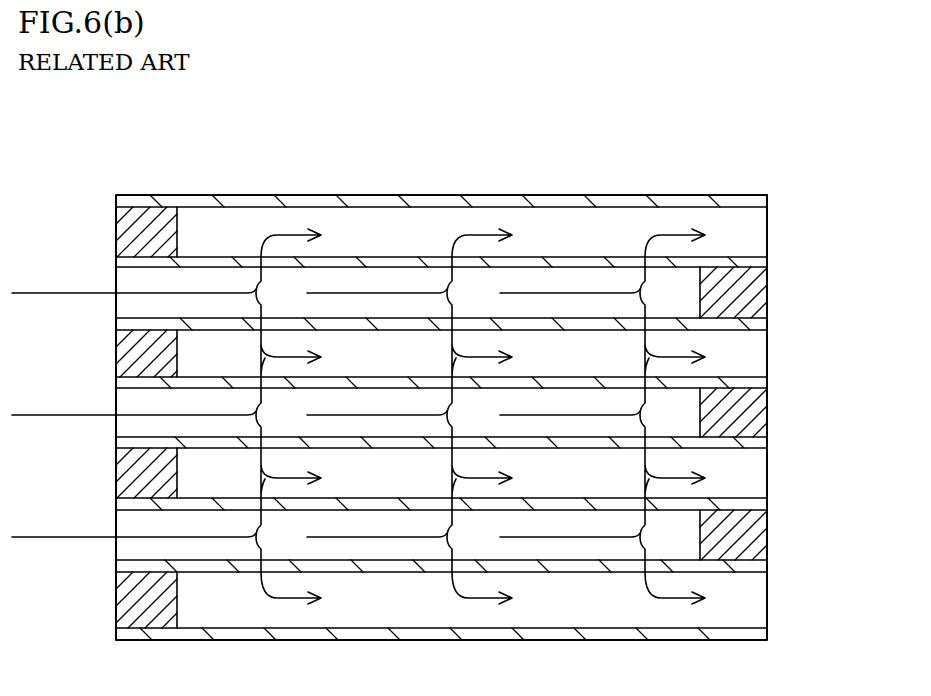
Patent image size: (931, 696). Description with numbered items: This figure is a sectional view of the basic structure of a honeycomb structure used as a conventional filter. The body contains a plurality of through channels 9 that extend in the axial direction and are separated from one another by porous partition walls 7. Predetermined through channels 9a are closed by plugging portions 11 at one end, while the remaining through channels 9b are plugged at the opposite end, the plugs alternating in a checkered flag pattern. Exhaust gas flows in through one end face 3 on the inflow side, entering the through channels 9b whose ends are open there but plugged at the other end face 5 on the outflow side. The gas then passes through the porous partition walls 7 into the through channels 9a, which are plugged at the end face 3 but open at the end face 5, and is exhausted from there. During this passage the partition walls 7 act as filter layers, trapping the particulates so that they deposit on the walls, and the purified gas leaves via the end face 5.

The end face 3 is at (112, 432).
The other end face 5 is at (768, 471).
The porous partition walls 7 is at (542, 265).
The through channels 9 is at (410, 340).
The through channels 9a is at (428, 120).
The through channels 9b is at (427, 292).
The plugging portions 11 is at (120, 350).